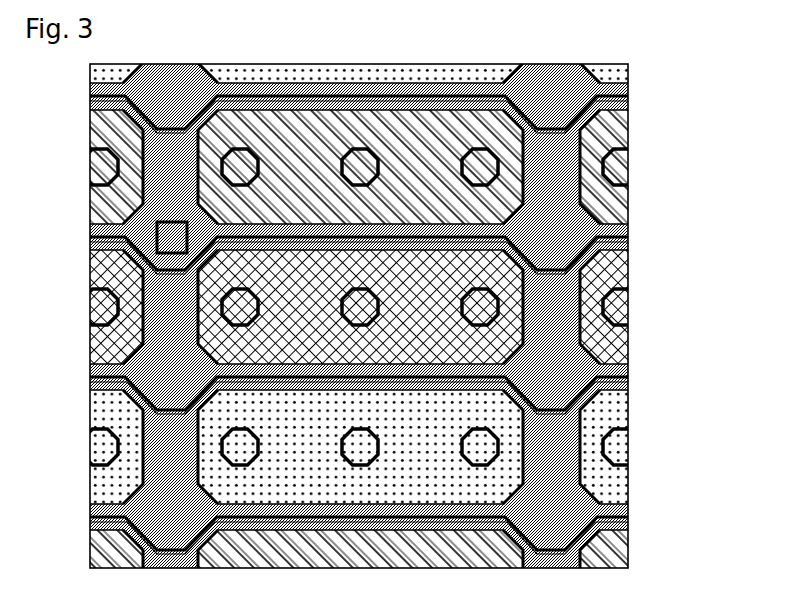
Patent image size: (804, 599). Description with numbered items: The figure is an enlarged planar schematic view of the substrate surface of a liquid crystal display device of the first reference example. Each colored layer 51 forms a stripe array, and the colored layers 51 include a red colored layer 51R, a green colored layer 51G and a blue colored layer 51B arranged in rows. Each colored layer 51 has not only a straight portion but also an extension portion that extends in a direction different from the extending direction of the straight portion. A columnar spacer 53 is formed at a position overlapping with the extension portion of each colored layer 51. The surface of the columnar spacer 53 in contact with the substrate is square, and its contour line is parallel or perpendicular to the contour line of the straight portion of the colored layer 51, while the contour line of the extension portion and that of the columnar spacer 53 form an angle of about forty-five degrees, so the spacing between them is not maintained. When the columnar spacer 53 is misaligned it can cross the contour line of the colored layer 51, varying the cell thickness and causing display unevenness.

The colored layer 51 is at (720, 186).
The blue colored layer 51B is at (605, 197).
The red colored layer 51R is at (605, 335).
The green colored layer 51G is at (605, 477).
The columnar spacer 53 is at (157, 238).